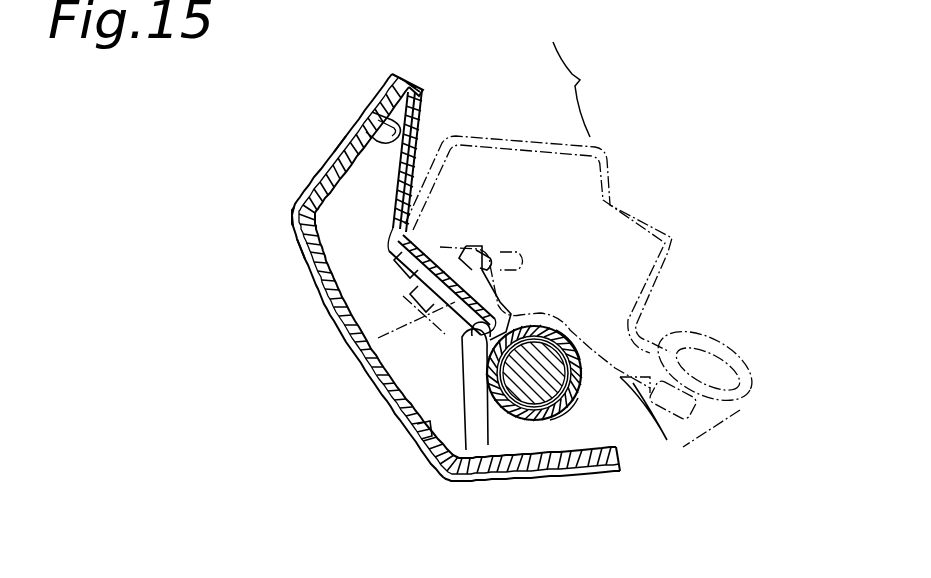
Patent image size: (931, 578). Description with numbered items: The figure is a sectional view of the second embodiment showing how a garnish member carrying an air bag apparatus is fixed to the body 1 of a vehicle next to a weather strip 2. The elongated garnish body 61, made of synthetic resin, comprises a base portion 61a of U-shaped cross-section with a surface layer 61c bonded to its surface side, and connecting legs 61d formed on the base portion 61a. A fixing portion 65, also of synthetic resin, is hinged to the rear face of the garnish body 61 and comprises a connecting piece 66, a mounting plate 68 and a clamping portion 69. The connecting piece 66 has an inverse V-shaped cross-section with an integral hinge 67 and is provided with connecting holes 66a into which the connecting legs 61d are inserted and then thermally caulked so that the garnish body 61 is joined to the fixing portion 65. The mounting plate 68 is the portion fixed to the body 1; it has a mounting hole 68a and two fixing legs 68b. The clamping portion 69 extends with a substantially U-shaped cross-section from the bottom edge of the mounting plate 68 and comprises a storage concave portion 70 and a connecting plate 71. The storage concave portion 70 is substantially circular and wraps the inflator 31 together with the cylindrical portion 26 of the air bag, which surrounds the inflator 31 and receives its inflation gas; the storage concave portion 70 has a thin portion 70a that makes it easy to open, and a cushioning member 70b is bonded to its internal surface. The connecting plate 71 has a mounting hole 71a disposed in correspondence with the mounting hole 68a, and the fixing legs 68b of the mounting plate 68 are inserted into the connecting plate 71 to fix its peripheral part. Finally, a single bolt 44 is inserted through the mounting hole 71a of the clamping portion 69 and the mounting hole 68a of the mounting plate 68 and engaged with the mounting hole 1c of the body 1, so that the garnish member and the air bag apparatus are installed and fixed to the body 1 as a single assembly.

The body 1 is at (613, 177).
The mounting hole 1c is at (513, 263).
The weather strip 2 is at (757, 377).
The cylindrical portion 26 is at (548, 402).
The inflator 31 is at (517, 406).
The bolt 44 is at (455, 293).
The garnish body 61 is at (293, 167).
The base portion 61a is at (317, 247).
The surface layer 61c is at (290, 203).
The connecting leg 61d is at (350, 141).
The fixing portion 65 is at (588, 89).
The connecting piece 66 is at (413, 163).
The connecting hole 66a is at (380, 110).
The integral hinge 67 is at (414, 84).
The mounting plate 68 is at (460, 217).
The mounting hole 68a is at (383, 290).
The fixing leg 68b is at (410, 268).
The clamping portion 69 is at (587, 392).
The storage concave portion 70 is at (583, 362).
The thin portion 70a is at (575, 408).
The cushioning member 70b is at (577, 337).
The connecting plate 71 is at (460, 444).
The mounting hole 71a is at (476, 328).